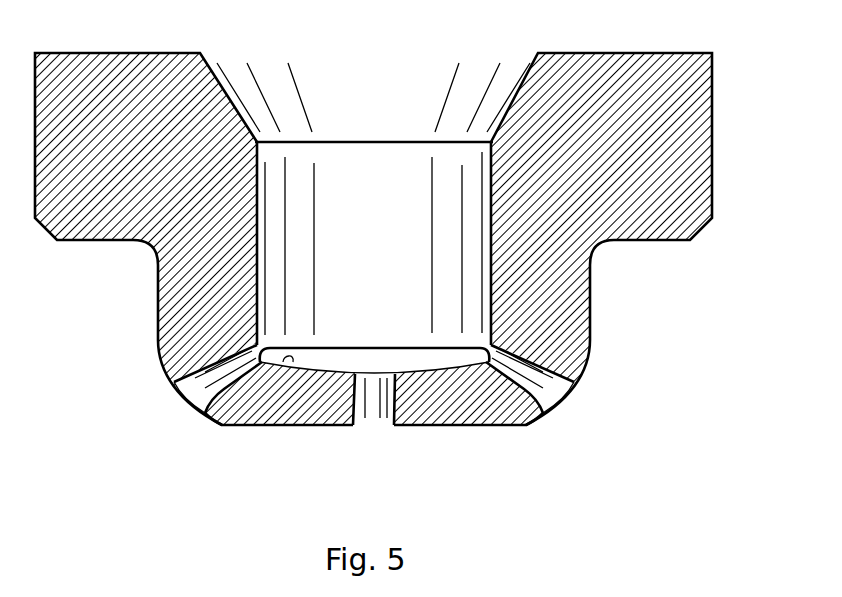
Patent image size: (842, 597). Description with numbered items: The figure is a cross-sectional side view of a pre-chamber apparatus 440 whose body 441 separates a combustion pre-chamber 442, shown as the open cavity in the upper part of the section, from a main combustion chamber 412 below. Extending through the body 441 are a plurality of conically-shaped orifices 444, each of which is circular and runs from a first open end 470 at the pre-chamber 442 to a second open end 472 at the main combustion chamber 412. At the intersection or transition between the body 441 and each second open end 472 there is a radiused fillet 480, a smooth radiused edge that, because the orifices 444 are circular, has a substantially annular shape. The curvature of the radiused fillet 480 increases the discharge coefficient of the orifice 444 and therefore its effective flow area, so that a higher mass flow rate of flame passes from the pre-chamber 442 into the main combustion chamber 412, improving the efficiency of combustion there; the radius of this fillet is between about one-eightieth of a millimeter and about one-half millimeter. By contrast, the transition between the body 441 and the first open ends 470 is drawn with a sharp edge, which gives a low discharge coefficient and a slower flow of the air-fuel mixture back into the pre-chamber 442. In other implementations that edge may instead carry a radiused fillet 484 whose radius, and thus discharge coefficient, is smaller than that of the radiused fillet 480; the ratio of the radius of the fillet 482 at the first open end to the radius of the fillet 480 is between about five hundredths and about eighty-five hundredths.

The pre-chamber apparatus 440 is at (637, 67).
The body 441 is at (695, 133).
The pre-chamber 442 is at (392, 211).
The main combustion chamber 412 is at (333, 465).
The orifices 444 is at (200, 356).
The first open ends 470 is at (258, 335).
The second open end 472 is at (176, 385).
The radiused fillet 480 is at (206, 413).
The fillet 482 is at (255, 335).
The radiused fillet 484 is at (347, 375).